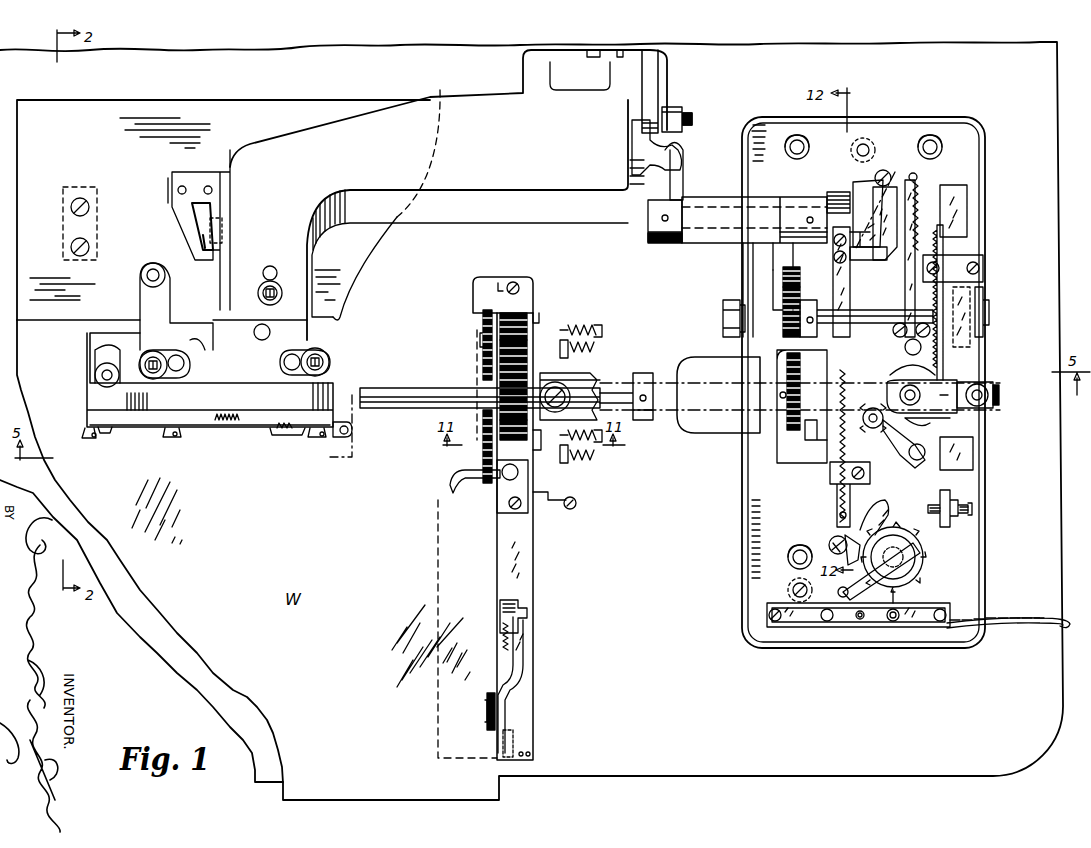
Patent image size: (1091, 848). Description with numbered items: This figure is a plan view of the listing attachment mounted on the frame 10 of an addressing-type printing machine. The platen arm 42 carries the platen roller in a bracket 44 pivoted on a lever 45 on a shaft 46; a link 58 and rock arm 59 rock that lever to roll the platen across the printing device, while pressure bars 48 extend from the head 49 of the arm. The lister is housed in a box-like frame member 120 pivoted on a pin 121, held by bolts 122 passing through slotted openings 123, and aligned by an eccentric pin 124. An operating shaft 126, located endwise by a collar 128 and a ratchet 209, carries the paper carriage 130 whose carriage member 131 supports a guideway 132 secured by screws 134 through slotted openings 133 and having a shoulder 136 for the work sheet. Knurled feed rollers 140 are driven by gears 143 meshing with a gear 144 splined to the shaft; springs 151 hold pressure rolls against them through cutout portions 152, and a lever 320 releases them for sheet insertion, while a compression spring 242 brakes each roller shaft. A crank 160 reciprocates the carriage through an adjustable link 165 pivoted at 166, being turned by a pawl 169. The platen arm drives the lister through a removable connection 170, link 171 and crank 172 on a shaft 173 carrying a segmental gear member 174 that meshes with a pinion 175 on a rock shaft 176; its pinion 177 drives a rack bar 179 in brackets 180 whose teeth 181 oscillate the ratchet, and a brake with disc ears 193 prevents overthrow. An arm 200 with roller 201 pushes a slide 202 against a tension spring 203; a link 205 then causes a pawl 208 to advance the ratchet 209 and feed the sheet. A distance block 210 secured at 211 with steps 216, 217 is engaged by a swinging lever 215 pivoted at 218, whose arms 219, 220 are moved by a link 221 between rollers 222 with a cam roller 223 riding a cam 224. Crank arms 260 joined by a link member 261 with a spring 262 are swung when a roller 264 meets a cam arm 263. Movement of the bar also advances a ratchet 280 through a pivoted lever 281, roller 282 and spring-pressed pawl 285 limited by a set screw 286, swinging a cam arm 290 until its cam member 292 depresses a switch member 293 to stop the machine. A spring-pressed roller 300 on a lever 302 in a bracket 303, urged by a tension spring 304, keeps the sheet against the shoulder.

The frame 10 is at (531, 421).
The platen arm 42 is at (448, 195).
The bracket 44 is at (222, 286).
The lever 45 is at (185, 228).
The shaft 46 is at (168, 190).
The pressure bars 48 is at (310, 437).
The head of the platen arm 49 is at (210, 380).
The link 58 is at (655, 85).
The rock arm 59 is at (680, 146).
The box-like frame member 120 is at (985, 555).
The pin 121 is at (868, 140).
The bolts 122 is at (790, 553).
The slotted openings 123 is at (942, 152).
The eccentric pin 124 is at (788, 590).
The operating shaft 126 is at (410, 390).
The collar 128 is at (642, 370).
The paper carriage 130 is at (530, 513).
The carriage member 131 is at (538, 440).
The guideway 132 is at (516, 566).
The slotted openings 133 is at (500, 280).
The screws 134 is at (516, 282).
The shoulder 136 is at (497, 560).
The feed rollers 140 is at (483, 480).
The gear 143 is at (527, 430).
The gear 144 is at (527, 378).
The springs 151 is at (540, 318).
The cutout portions 152 is at (483, 342).
The crank 160 is at (998, 402).
The adjustable link 165 is at (572, 378).
The pivotal connection 166 is at (953, 420).
The pawl 169 is at (878, 428).
The removable connection 170 is at (690, 113).
The link 171 is at (683, 162).
The crank 172 is at (655, 213).
The shaft 173 is at (720, 233).
The segmental gear member 174 is at (790, 272).
The pinion 175 is at (785, 307).
The rock shaft 176 is at (865, 320).
The pinion 177 is at (975, 292).
The rack bar 179 is at (968, 198).
The brackets 180 is at (975, 455).
The teeth 181 is at (947, 362).
The ears 193 is at (916, 462).
The arm 200 is at (822, 193).
The roller 201 is at (848, 195).
The slide 202 is at (833, 287).
The tension spring 203 is at (830, 478).
The link 205 is at (830, 460).
The pawl 208 is at (790, 427).
The ratchet 209 is at (787, 365).
The distance block 210 is at (835, 244).
The securing means 211 is at (835, 260).
The swinging lever 215 is at (872, 195).
The step 216 is at (868, 261).
The step 217 is at (888, 262).
The pivot 218 is at (886, 170).
The arm 219 is at (886, 232).
The arm 220 is at (912, 176).
The link 221 is at (917, 186).
The rollers 222 is at (895, 334).
The cam roller 223 is at (905, 347).
The cam 224 is at (910, 365).
The compression spring 242 is at (578, 462).
The crank arm 260 is at (106, 434).
The link member 261 is at (140, 428).
The spring 262 is at (275, 435).
The cam arm 263 is at (452, 474).
The roller 264 is at (355, 430).
The ratchet 280 is at (927, 555).
The pivoted lever 281 is at (840, 532).
The roller 282 is at (832, 543).
The spring-pressed pawl 285 is at (885, 500).
The set screw 286 is at (975, 513).
The cam arm 290 is at (815, 620).
The cam member 292 is at (897, 628).
The switch member 293 is at (862, 628).
The spring-pressed roller 300 is at (487, 705).
The lever 302 is at (525, 667).
The bracket 303 is at (527, 606).
The tension spring 304 is at (502, 625).
The lever 320 is at (568, 493).